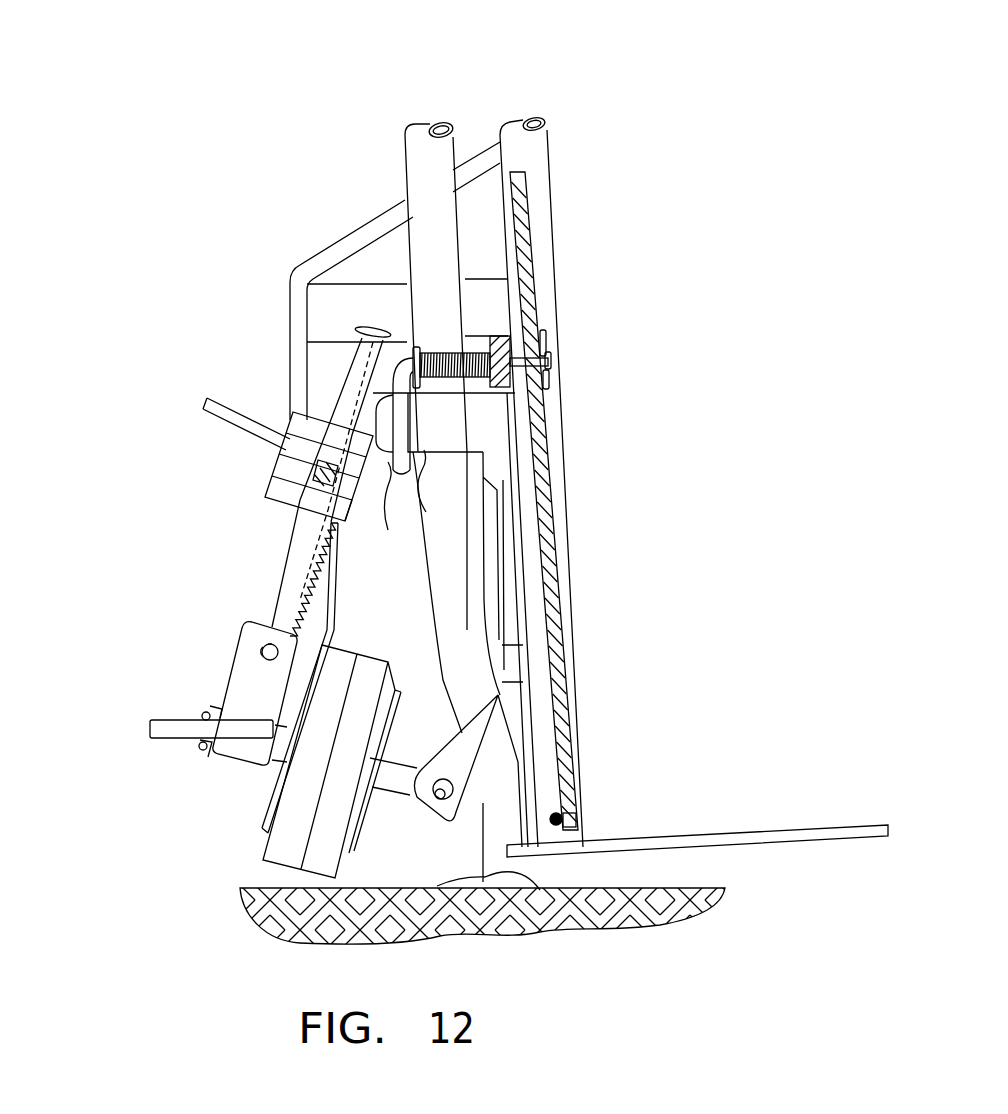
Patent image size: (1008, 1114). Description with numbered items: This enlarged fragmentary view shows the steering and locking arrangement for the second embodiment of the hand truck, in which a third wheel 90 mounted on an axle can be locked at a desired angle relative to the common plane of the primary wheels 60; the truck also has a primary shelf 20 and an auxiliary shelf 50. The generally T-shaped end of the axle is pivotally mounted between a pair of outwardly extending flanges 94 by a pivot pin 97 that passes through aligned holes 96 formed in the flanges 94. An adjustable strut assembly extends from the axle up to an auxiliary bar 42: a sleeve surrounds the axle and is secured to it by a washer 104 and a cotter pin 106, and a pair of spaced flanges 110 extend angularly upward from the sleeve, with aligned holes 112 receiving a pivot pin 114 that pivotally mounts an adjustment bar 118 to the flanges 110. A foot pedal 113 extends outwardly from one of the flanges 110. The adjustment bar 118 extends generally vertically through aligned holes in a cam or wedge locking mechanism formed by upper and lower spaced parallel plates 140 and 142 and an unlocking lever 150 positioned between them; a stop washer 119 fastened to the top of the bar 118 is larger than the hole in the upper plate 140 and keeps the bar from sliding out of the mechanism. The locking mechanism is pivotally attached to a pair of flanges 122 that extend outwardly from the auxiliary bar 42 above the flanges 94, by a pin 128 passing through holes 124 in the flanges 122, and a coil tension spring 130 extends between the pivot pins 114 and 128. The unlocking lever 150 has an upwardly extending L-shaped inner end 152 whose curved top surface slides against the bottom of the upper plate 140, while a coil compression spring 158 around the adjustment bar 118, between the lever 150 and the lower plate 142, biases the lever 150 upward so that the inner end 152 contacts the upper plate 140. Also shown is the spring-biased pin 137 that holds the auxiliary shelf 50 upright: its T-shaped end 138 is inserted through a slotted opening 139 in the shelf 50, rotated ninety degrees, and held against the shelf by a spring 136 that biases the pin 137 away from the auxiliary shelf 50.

The primary shelf 20 is at (820, 825).
The auxiliary bar 42 is at (440, 148).
The auxiliary shelf 50 is at (582, 620).
The primary wheels 60 is at (510, 862).
The third wheel 90 is at (283, 847).
The outwardly extending flanges 94 is at (487, 732).
The aligned holes 96 is at (455, 797).
The pivot pin 97 is at (455, 787).
The washer 104 is at (207, 760).
The cotter pin 106 is at (206, 743).
The spaced flanges 110 is at (243, 690).
The aligned holes 112 is at (258, 650).
The foot pedal 113 is at (150, 729).
The pivot pin 114 is at (270, 643).
The adjustment bar 118 is at (298, 570).
The stop washer 119 is at (358, 327).
The flanges 122 is at (442, 418).
The holes 124 is at (372, 390).
The pin 128 is at (348, 425).
The coil tension spring 130 is at (337, 540).
The spring 136 is at (455, 352).
The spring-biased pin 137 is at (425, 493).
The T-shaped end 138 is at (556, 355).
The slotted opening 139 is at (553, 352).
The upper plate 140 is at (292, 413).
The lower plate 142 is at (290, 502).
The unlocking lever 150 is at (205, 402).
The L-shaped inner end 152 is at (342, 522).
The coil compression spring 158 is at (290, 498).